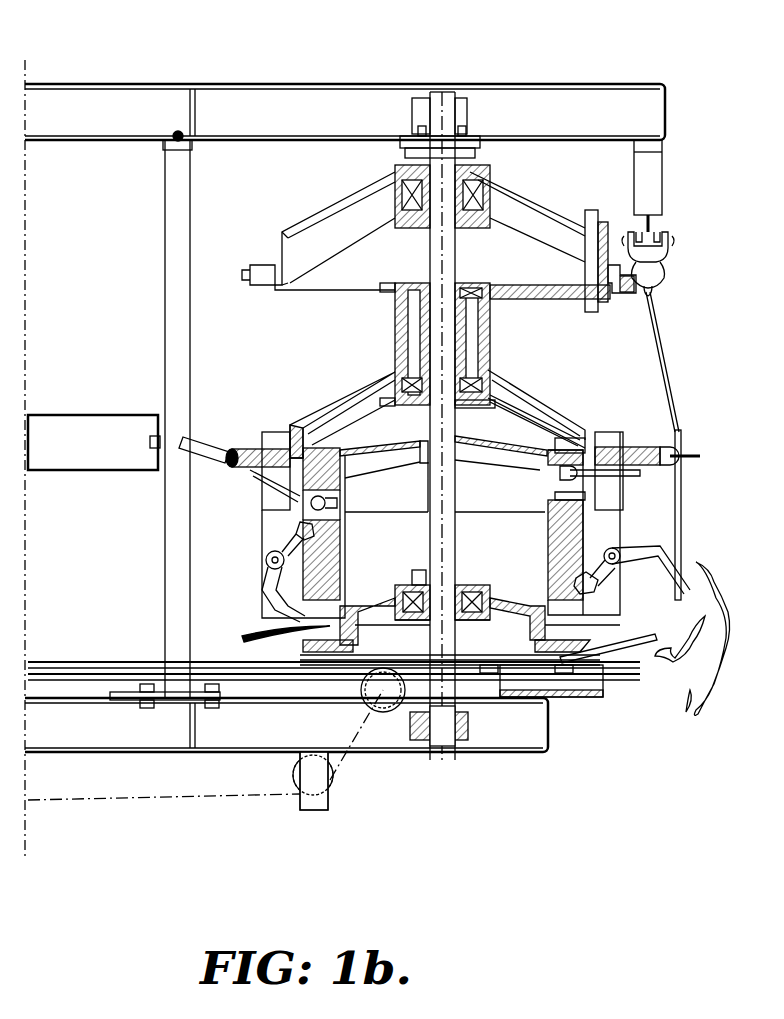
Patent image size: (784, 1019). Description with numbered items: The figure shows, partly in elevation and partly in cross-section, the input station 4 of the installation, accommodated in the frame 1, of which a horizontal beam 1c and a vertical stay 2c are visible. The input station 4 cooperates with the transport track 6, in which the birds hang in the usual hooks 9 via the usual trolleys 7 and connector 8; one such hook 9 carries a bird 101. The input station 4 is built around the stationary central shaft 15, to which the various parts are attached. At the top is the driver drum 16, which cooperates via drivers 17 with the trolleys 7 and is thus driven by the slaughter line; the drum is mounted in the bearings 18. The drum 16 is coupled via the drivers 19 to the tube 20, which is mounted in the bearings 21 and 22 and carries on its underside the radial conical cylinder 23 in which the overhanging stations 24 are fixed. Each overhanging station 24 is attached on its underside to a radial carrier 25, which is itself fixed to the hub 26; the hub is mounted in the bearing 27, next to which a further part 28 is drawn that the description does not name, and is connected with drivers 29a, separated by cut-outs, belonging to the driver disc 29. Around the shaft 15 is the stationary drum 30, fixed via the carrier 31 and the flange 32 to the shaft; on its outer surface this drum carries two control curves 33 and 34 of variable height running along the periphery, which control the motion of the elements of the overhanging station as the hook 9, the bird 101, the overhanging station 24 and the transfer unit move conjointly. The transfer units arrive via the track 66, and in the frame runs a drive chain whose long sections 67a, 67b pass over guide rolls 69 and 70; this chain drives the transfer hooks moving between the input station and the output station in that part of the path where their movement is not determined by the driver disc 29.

The frame 1 is at (194, 70).
The horizontal beam 1c is at (522, 746).
The vertical stay 2c is at (188, 188).
The input station 4 is at (451, 70).
The transport track 6 is at (660, 232).
The trolley 7 is at (666, 262).
The connector 8 is at (665, 356).
The hook 9 is at (682, 486).
The stationary central shaft 15 is at (450, 120).
The driver drum 16 is at (539, 200).
The drivers 17 is at (626, 298).
The bearings 18 is at (400, 170).
The drivers 19 is at (590, 310).
The tube 20 is at (396, 330).
The bearing 21 is at (395, 300).
The bearing 22 is at (387, 372).
The radial conical cylinder 23 is at (316, 416).
The overhanging station 24 is at (272, 434).
The radial carrier 25 is at (586, 596).
The hub 26 is at (490, 596).
The bearing 27 is at (463, 584).
The lower plate 28 is at (520, 632).
The driver disc 29 is at (560, 676).
The drivers 29a is at (638, 654).
The stationary drum 30 is at (330, 570).
The carrier 31 is at (378, 458).
The flange 32 is at (475, 478).
The control curve 33 is at (332, 540).
The control curve 34 is at (332, 506).
The track 66 is at (40, 660).
The chain section 67a is at (98, 660).
The chain section 67b is at (72, 800).
The guide roll 69 is at (386, 705).
The guide roll 70 is at (298, 773).
The bird 101 is at (708, 668).